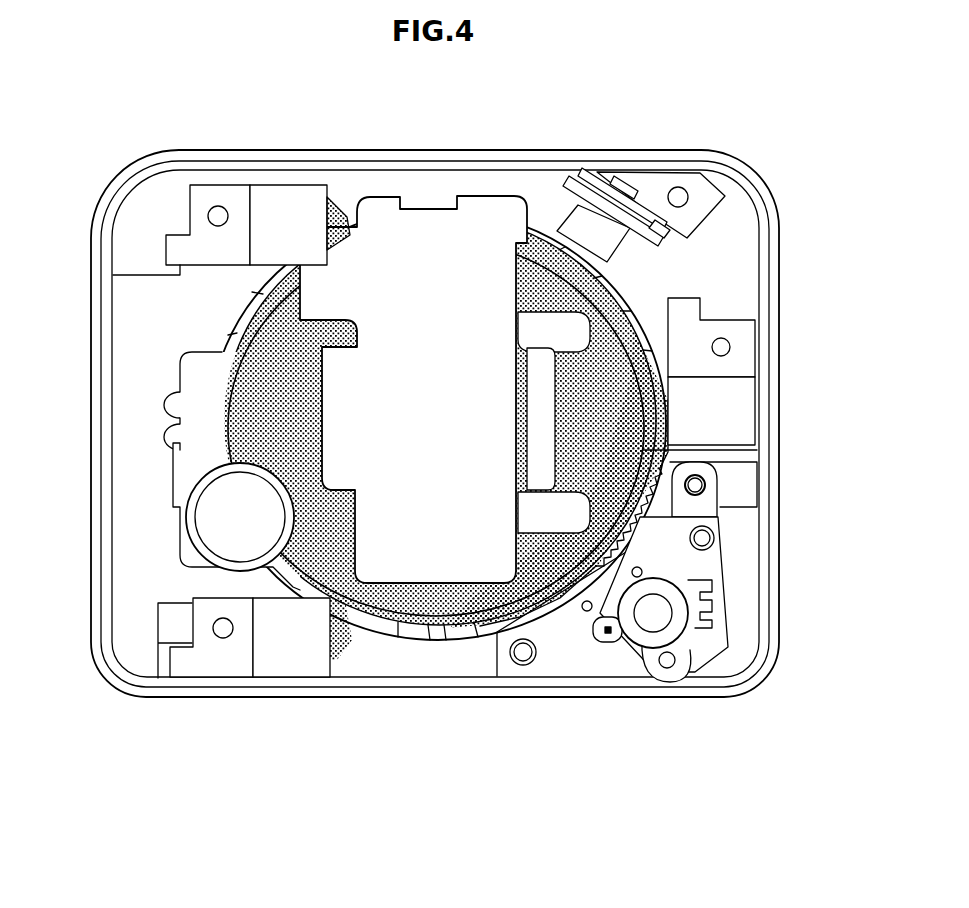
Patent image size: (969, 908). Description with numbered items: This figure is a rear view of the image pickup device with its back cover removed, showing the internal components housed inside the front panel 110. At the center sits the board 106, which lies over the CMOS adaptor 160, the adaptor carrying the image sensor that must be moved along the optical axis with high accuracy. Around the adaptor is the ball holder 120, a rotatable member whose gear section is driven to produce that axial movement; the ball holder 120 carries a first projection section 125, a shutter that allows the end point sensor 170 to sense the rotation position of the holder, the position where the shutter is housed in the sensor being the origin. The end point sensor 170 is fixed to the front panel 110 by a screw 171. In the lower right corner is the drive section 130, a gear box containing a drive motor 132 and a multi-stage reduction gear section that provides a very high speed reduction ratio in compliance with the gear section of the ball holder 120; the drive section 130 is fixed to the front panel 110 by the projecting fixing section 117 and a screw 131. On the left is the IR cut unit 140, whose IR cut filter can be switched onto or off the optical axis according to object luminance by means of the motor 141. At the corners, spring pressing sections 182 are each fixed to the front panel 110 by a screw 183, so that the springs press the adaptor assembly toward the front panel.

The board 106 is at (394, 232).
The front panel 110 is at (443, 699).
The fixing section 117 is at (747, 475).
The ball holder 120 is at (615, 284).
The first projection section 125 is at (537, 232).
The drive section 130 is at (629, 652).
The screw 131 is at (702, 487).
The drive motor 132 is at (675, 635).
The IR cut unit 140 is at (188, 473).
The motor 141 is at (208, 522).
The CMOS adaptor 160 is at (267, 337).
The end point sensor 170 is at (566, 204).
The screw 171 is at (678, 187).
The spring pressing section 182 is at (288, 197).
The screw 183 is at (218, 206).